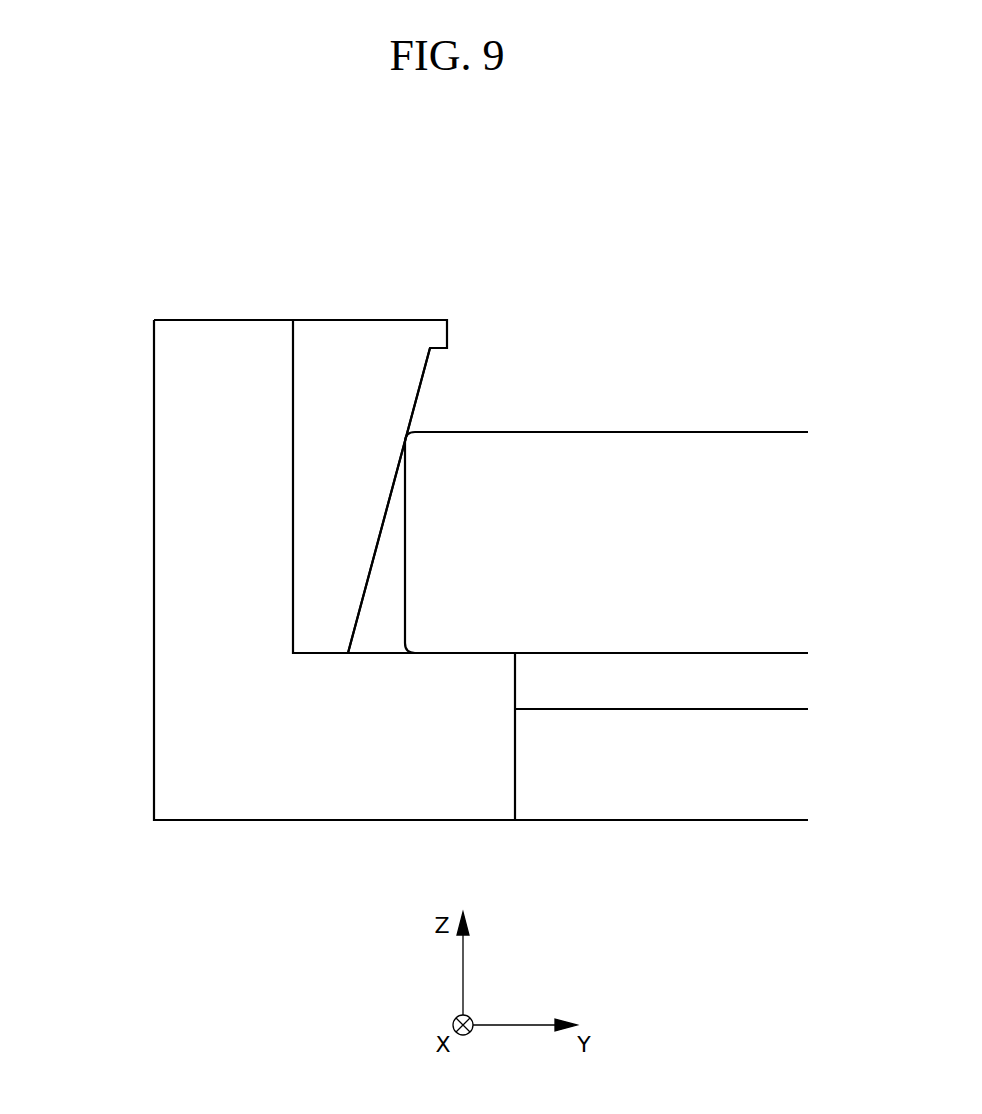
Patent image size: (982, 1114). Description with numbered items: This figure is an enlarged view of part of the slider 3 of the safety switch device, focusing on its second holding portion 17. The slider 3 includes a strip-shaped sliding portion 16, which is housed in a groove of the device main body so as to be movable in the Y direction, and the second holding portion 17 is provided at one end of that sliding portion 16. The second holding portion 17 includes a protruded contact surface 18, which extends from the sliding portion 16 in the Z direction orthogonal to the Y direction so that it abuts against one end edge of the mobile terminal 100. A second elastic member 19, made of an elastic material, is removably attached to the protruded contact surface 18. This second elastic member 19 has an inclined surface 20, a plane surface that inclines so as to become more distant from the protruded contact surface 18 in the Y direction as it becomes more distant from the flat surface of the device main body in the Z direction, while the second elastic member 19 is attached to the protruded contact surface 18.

The slider 3 is at (140, 368).
The second holding portion 17 is at (432, 212).
The protruded contact surface 18 is at (293, 345).
The second elastic member 19 is at (408, 320).
The inclined surface 20 is at (373, 565).
The mobile terminal 100 is at (637, 432).
The sliding portion 16 is at (728, 820).